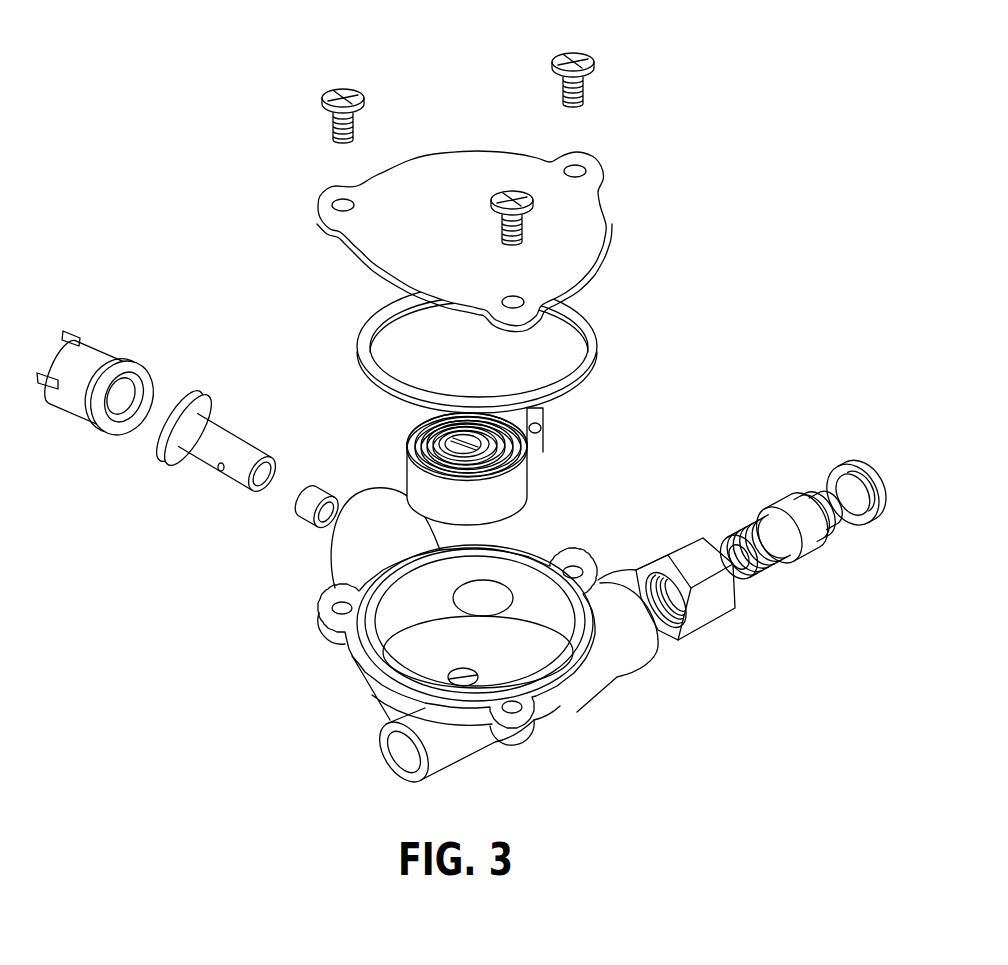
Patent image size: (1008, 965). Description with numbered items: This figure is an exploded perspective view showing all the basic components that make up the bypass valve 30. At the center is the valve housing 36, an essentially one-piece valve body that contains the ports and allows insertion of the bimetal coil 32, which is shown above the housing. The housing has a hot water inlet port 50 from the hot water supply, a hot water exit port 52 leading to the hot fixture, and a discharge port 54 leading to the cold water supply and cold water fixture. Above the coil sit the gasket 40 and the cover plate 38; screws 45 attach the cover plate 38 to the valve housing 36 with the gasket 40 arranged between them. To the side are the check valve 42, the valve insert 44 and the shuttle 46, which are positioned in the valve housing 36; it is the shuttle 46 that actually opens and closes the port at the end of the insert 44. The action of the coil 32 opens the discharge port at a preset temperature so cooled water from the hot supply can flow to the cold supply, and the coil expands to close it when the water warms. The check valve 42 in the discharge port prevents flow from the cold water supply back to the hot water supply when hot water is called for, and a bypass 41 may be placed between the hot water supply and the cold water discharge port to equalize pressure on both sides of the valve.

The valve 30 is at (655, 293).
The bimetal coil 32 is at (520, 478).
The valve housing 36 is at (563, 706).
The cover plate 38 is at (585, 236).
The gasket 40 is at (592, 335).
The bypass 41 is at (216, 471).
The check valve 42 is at (118, 338).
The valve insert 44 is at (240, 428).
The screws 45 is at (332, 92).
The shuttle 46 is at (298, 520).
The hot water inlet port 50 is at (716, 534).
The hot water exit port 52 is at (393, 755).
The discharge port 54 is at (336, 561).